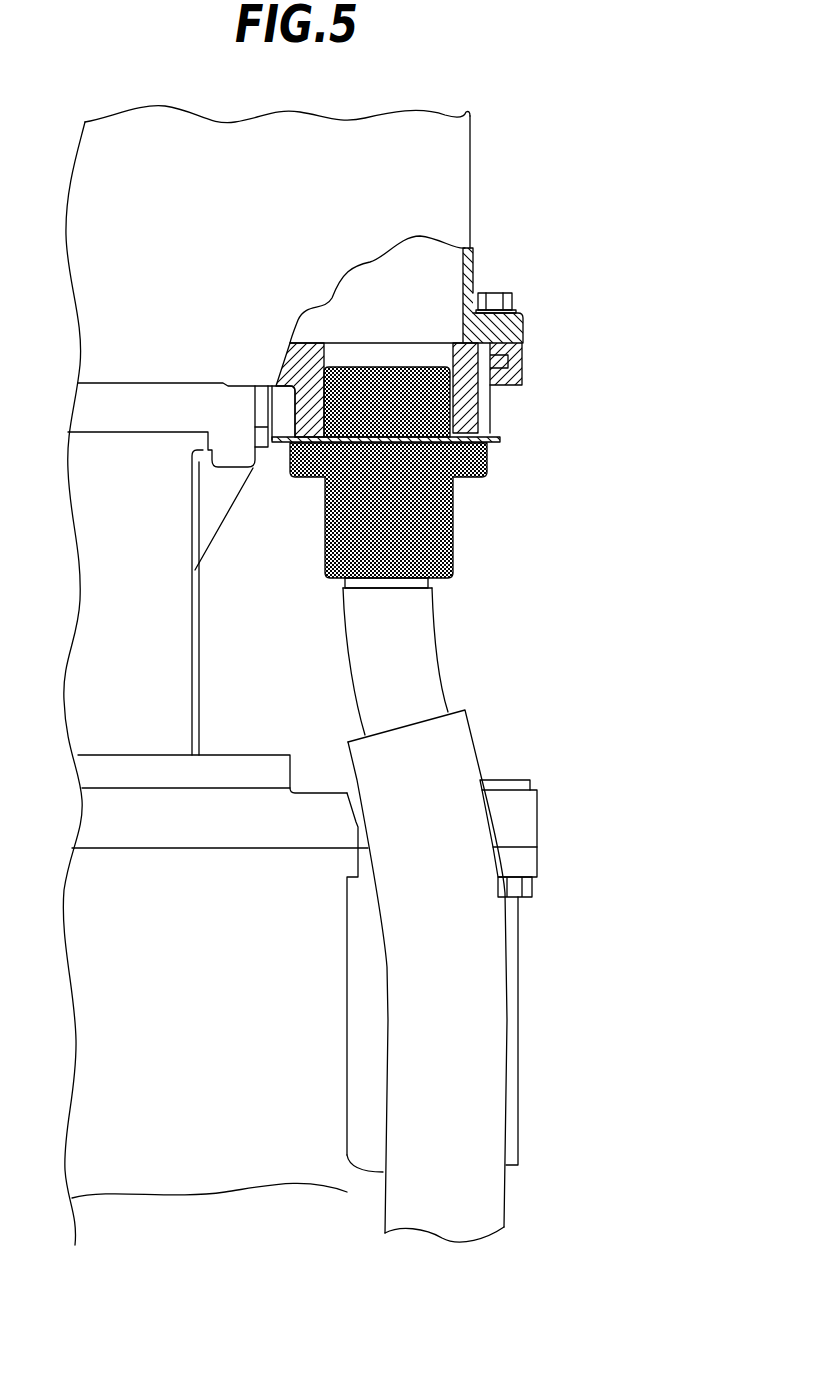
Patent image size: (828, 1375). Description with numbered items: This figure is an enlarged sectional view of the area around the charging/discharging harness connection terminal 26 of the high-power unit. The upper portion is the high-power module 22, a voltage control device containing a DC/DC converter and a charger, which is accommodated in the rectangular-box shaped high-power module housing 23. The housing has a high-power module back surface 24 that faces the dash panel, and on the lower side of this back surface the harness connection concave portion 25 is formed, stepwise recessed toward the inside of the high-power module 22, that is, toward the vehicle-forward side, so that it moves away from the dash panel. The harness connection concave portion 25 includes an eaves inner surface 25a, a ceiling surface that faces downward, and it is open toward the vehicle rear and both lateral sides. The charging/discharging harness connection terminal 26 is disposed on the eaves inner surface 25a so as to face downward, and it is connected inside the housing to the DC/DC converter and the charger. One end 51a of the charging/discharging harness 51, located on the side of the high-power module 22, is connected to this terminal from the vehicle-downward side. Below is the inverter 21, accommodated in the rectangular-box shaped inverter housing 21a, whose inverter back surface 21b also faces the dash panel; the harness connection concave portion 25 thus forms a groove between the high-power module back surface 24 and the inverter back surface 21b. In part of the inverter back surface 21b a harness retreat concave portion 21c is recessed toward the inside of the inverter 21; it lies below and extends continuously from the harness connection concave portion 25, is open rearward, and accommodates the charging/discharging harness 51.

The inverter 21 is at (198, 1018).
The inverter housing 21a is at (220, 934).
The inverter back surface 21b is at (520, 978).
The harness retreat concave portion 21c is at (368, 1030).
The high-power module 22 is at (256, 196).
The high-power module housing 23 is at (392, 254).
The high-power module back surface 24 is at (478, 167).
The harness connection concave portion 25 is at (292, 651).
The eaves inner surface 25a is at (500, 442).
The charging/discharging harness connection terminal 26 is at (470, 408).
The charging/discharging harness 51 is at (443, 777).
The one end of charging/discharging harness 51a is at (453, 537).